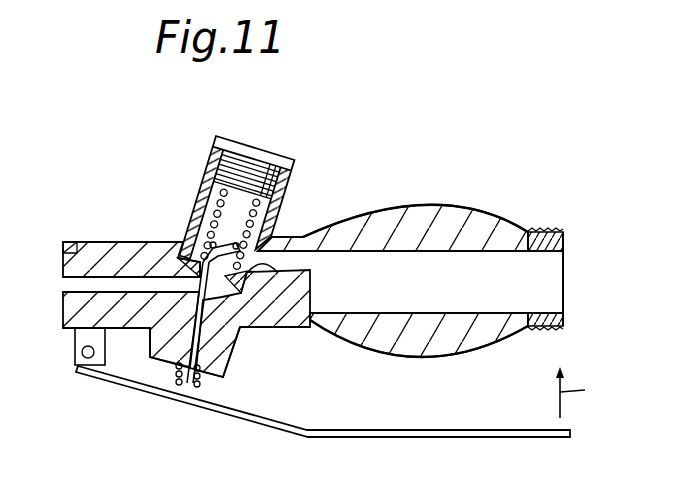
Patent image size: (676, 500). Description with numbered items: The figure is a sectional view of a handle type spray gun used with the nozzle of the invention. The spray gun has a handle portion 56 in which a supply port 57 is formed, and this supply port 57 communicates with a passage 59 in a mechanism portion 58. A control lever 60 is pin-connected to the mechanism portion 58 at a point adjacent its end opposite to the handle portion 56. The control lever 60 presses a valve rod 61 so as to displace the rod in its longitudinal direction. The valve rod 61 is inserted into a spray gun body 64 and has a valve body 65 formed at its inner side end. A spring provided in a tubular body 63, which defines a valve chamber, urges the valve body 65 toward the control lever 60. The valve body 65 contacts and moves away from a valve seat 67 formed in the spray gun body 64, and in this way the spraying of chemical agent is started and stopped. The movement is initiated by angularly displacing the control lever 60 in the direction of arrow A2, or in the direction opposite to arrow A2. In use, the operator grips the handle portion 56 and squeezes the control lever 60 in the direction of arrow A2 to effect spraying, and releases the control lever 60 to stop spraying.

The handle portion 56 is at (443, 232).
The supply port 57 is at (522, 288).
The mechanism portion 58 is at (147, 180).
The passage 59 is at (292, 255).
The control lever 60 is at (407, 437).
The valve rod 61 is at (225, 376).
The tubular body 63 is at (225, 190).
The spray gun body 64 is at (75, 257).
The valve body 65 is at (205, 250).
The valve seat 67 is at (272, 274).
The arrow A2 is at (592, 392).